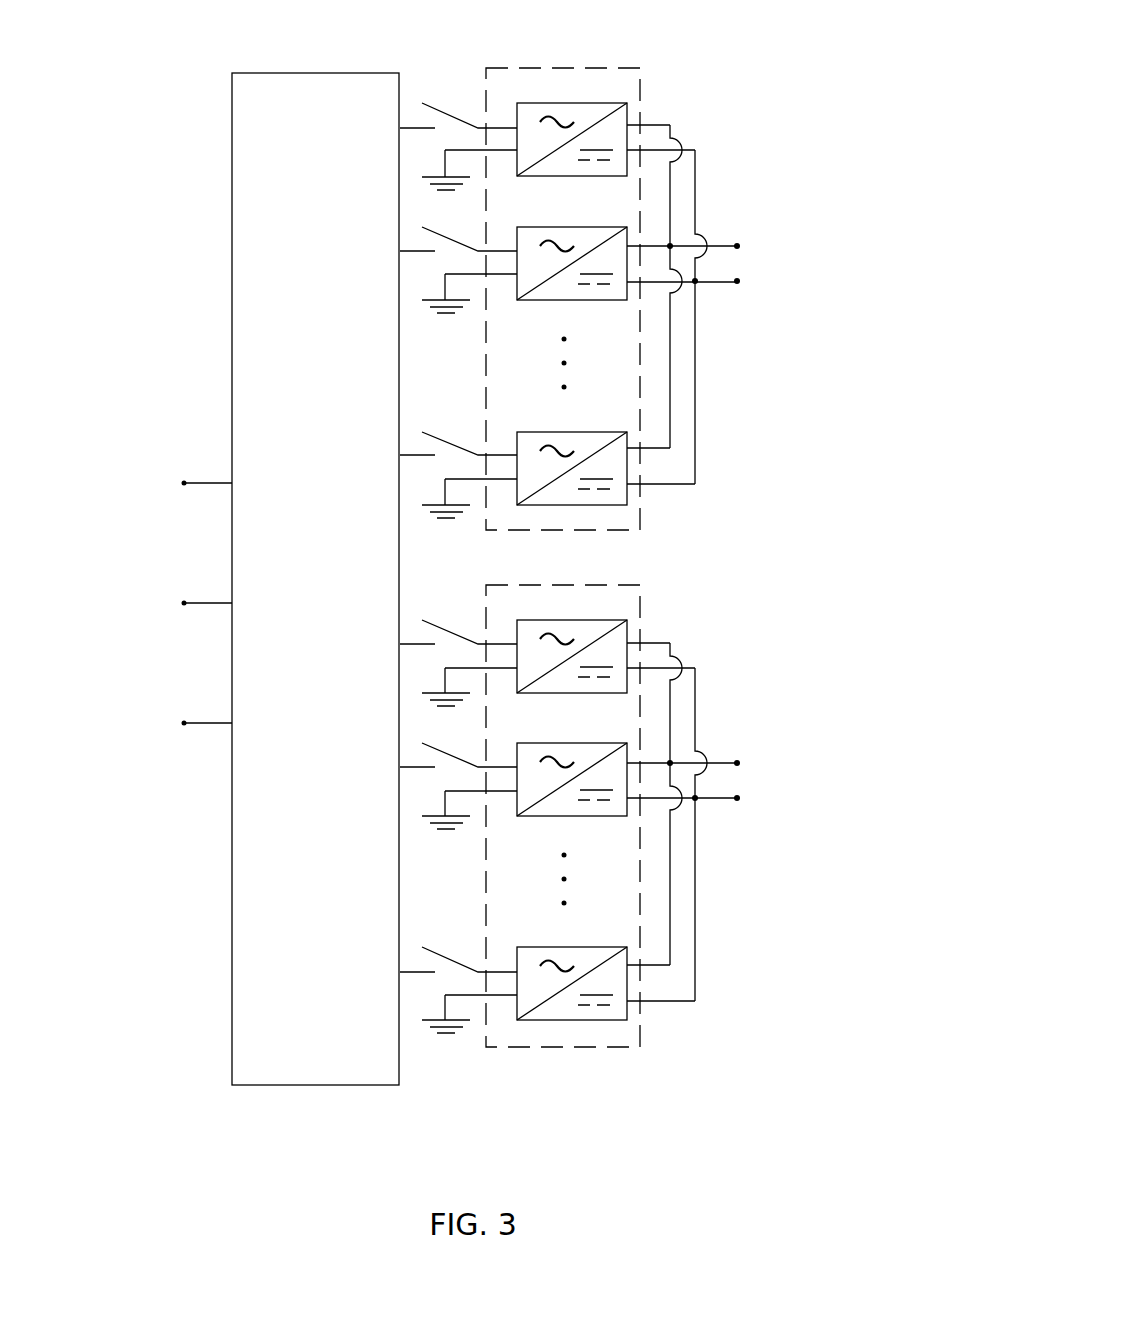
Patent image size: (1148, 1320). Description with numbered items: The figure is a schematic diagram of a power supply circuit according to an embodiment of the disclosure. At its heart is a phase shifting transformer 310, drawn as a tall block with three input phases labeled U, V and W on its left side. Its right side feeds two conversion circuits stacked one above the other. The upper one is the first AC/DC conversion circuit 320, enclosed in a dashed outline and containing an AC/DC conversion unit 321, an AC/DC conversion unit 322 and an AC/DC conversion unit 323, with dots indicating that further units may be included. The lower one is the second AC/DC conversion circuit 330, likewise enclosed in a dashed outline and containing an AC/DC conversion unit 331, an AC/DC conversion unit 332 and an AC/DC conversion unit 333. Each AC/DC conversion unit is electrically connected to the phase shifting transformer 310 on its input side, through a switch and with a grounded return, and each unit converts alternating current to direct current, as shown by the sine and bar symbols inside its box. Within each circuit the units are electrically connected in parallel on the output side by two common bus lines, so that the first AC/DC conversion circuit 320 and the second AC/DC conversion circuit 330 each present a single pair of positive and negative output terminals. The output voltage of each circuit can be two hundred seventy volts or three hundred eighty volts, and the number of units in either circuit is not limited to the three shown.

The phase shifting transformer 310 is at (232, 388).
The first AC/DC conversion circuit 320 is at (640, 108).
The AC/DC conversion unit 321 is at (563, 103).
The AC/DC conversion unit 322 is at (597, 227).
The AC/DC conversion unit 323 is at (588, 432).
The second AC/DC conversion circuit 330 is at (640, 630).
The AC/DC conversion unit 331 is at (585, 620).
The AC/DC conversion unit 332 is at (610, 743).
The AC/DC conversion unit 333 is at (594, 947).